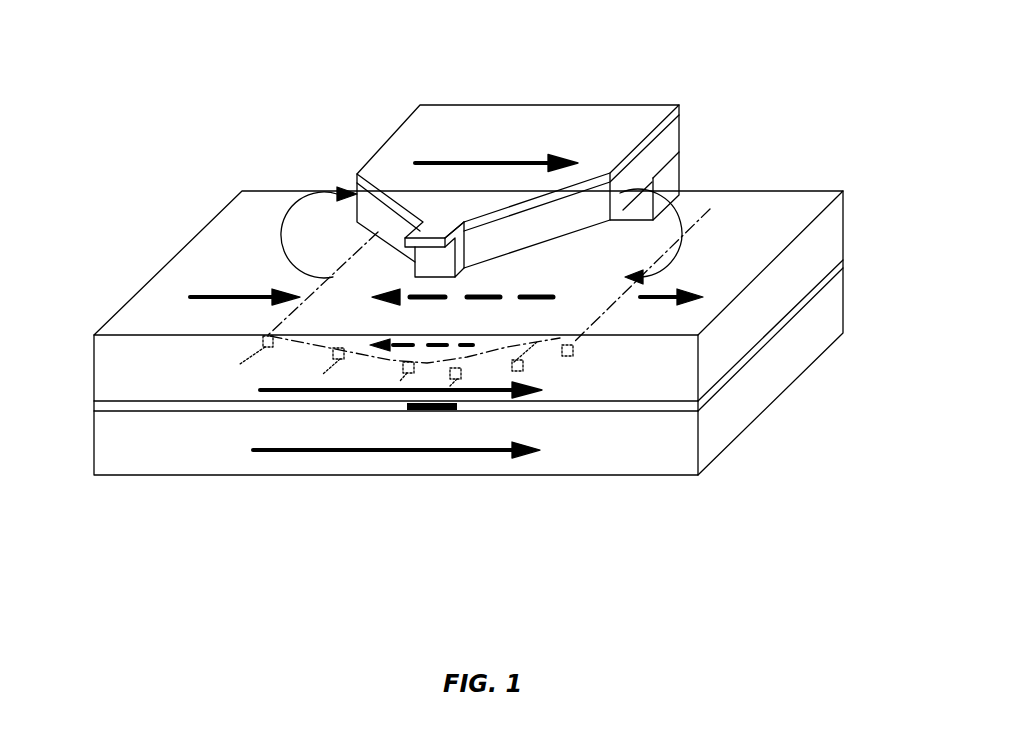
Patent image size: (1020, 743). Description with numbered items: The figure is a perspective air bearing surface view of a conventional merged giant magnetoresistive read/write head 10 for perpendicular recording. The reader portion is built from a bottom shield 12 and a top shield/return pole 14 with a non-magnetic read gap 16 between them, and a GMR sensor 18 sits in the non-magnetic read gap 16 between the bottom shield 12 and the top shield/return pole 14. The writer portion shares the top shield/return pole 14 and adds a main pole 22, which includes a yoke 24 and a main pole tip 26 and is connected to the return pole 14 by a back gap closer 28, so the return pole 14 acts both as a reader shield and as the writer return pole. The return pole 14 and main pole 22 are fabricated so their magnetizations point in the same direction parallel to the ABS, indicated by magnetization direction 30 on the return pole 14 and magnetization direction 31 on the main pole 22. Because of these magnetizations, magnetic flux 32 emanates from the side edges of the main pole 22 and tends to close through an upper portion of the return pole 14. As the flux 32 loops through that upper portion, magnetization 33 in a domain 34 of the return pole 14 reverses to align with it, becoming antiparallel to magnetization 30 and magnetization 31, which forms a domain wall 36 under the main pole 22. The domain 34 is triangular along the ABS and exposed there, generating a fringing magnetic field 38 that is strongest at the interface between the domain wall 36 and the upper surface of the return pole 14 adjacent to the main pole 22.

The giant magnetoresistive read/write head 10 is at (845, 143).
The bottom shield 12 is at (117, 448).
The top shield/return pole 14 is at (108, 368).
The non-magnetic read gap 16 is at (108, 405).
The GMR sensor 18 is at (457, 407).
The main pole 22 is at (569, 166).
The yoke 24 is at (672, 142).
The main pole tip 26 is at (680, 105).
The back gap closer 28 is at (668, 182).
The magnetization direction 30 is at (280, 391).
The magnetization direction 31 is at (492, 158).
The magnetic flux 32 is at (282, 232).
The magnetization 33 is at (553, 298).
The domain 34 is at (311, 299).
The domain wall 36 is at (710, 209).
The fringing magnetic field 38 is at (265, 337).